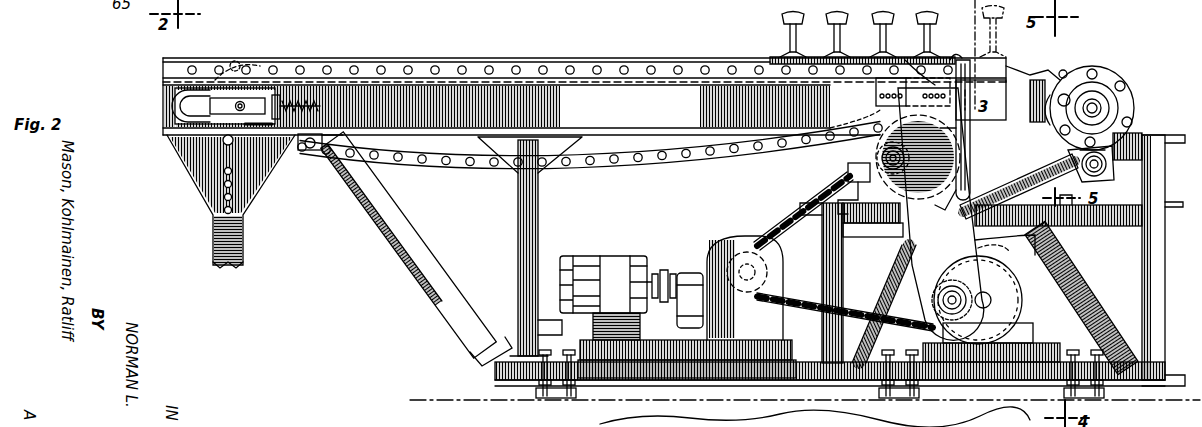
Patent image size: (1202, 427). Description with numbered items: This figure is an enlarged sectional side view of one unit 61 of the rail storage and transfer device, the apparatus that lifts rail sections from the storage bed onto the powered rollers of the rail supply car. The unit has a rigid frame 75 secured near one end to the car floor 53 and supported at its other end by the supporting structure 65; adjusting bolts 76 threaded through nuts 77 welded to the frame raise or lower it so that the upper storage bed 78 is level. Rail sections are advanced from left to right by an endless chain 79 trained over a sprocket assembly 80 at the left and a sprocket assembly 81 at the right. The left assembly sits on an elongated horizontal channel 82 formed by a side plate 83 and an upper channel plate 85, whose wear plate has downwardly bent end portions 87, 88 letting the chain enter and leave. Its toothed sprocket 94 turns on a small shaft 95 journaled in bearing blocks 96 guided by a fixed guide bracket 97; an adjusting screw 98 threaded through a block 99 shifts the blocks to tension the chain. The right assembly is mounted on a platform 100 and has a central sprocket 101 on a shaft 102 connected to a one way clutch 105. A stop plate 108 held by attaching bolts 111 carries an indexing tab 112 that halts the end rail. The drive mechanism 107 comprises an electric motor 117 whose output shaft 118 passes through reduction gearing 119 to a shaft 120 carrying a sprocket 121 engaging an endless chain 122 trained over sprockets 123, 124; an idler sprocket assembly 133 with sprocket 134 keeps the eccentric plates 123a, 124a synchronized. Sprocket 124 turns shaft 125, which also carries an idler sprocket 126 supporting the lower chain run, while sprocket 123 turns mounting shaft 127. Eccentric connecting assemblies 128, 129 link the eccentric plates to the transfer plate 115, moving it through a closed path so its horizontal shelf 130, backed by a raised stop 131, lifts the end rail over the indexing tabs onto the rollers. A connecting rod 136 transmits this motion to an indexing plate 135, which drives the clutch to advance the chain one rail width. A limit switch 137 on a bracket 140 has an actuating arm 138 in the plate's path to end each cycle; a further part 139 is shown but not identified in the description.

The floor 53 is at (478, 396).
The unit 61 is at (756, 40).
The supporting structure 65 is at (186, 152).
The rigid frame 75 is at (376, 228).
The adjusting bolts 76 is at (572, 351).
The nuts 77 is at (542, 372).
The storage bed 78 is at (478, 66).
The endless chain 79 is at (594, 176).
The sprocket assembly 80 is at (220, 56).
The sprocket assembly 81 is at (1092, 108).
The elongated horizontal channel 82 is at (632, 95).
The side plate 83 is at (655, 118).
The upper channel plate 85 is at (408, 65).
The end portion 87 is at (888, 35).
The end portion 88 is at (1050, 70).
The toothed sprocket 94 is at (274, 124).
The small shaft 95 is at (217, 174).
The bearing blocks 96 is at (248, 98).
The fixed guide bracket 97 is at (176, 92).
The adjusting screw 98 is at (318, 106).
The block 99 is at (284, 86).
The platform 100 is at (1136, 135).
The central sprocket 101 is at (1060, 96).
The shaft 102 is at (1122, 78).
The one way clutch 105 is at (1128, 94).
The drive mechanism 107 is at (732, 210).
The stop plate 108 is at (876, 94).
The attaching bolts 111 is at (848, 106).
The indexing tab 112 is at (958, 60).
The transfer plate 115 is at (902, 247).
The electric motor 117 is at (588, 258).
The output shaft 118 is at (655, 270).
The reduction gearing 119 is at (720, 260).
The shaft 120 is at (790, 268).
The sprocket 121 is at (762, 274).
The endless chain 122 is at (774, 254).
The sprocket 123 is at (950, 278).
The eccentric plate 123a is at (1013, 287).
The sprocket 124 is at (900, 210).
The eccentric plate 124a is at (931, 183).
The shaft 125 is at (966, 165).
The idler sprocket 126 is at (892, 235).
The mounting shaft 127 is at (998, 300).
The eccentric connecting assembly 128 is at (908, 300).
The eccentric connecting assembly 129 is at (918, 157).
The horizontal shelf 130 is at (912, 60).
The raised stop 131 is at (952, 58).
The idler sprocket assembly 133 is at (1025, 214).
The sprocket 134 is at (990, 246).
The indexing plate 135 is at (1126, 140).
The connecting rod 136 is at (1003, 205).
The limit switch 137 is at (840, 171).
The actuating arm 138 is at (849, 172).
The shaft bearing 139 is at (1104, 166).
The bracket 140 is at (871, 213).